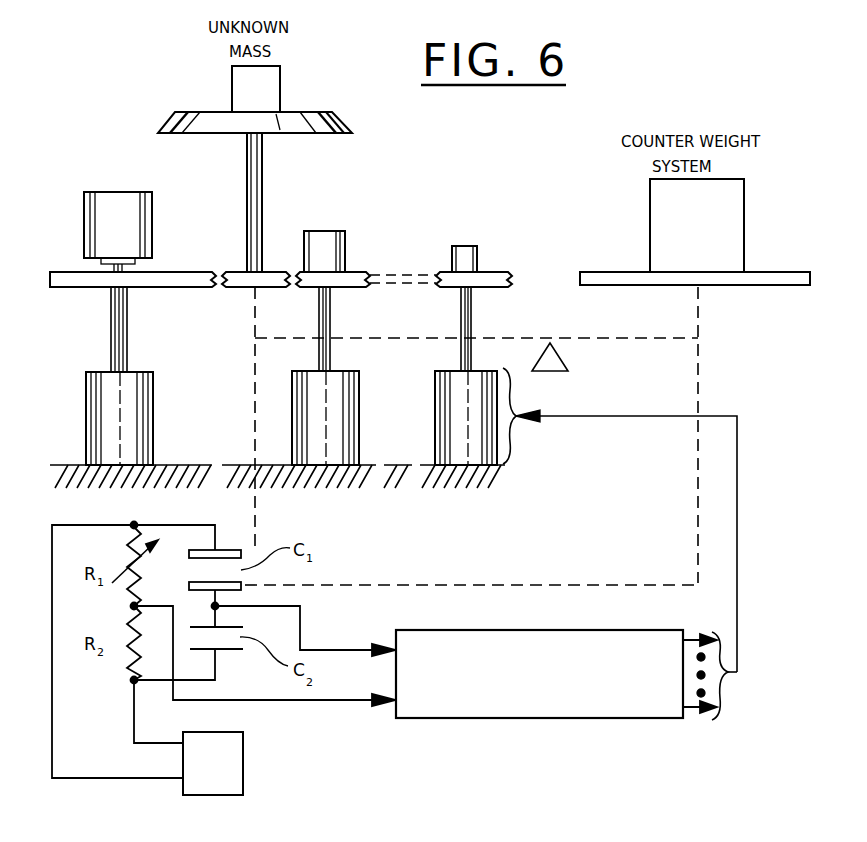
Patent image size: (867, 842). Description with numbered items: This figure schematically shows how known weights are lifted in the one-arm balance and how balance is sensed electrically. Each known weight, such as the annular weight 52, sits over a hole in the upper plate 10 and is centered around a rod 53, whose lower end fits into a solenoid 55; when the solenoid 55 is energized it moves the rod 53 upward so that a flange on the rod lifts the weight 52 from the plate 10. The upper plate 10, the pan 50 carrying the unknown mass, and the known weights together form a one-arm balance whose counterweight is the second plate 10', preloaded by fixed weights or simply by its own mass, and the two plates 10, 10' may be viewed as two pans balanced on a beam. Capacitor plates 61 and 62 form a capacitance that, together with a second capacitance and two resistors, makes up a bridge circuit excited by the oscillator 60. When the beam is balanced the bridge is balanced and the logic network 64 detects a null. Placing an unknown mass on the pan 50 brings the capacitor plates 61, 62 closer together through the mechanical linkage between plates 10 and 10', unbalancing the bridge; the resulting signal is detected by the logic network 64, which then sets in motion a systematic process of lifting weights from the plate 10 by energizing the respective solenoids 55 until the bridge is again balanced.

The upper plate 10 is at (279, 297).
The second plate 10' is at (695, 297).
The pan supporting unknown mass 50 is at (292, 125).
The annular weight 52 is at (115, 200).
The rod 53 is at (120, 345).
The solenoid 55 is at (96, 402).
The oscillator 60 is at (243, 767).
The capacitor plate 61 is at (218, 550).
The capacitor plate 62 is at (200, 582).
The logic network 64 is at (538, 638).